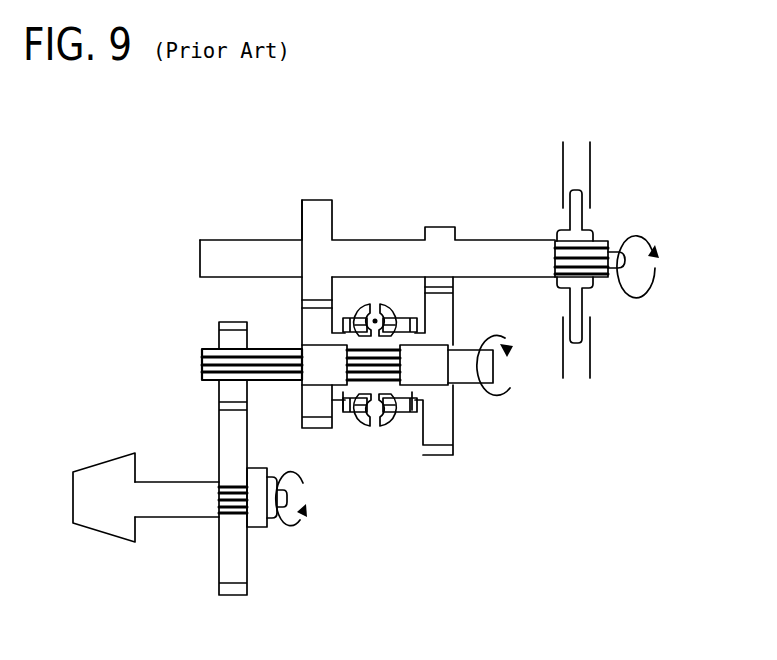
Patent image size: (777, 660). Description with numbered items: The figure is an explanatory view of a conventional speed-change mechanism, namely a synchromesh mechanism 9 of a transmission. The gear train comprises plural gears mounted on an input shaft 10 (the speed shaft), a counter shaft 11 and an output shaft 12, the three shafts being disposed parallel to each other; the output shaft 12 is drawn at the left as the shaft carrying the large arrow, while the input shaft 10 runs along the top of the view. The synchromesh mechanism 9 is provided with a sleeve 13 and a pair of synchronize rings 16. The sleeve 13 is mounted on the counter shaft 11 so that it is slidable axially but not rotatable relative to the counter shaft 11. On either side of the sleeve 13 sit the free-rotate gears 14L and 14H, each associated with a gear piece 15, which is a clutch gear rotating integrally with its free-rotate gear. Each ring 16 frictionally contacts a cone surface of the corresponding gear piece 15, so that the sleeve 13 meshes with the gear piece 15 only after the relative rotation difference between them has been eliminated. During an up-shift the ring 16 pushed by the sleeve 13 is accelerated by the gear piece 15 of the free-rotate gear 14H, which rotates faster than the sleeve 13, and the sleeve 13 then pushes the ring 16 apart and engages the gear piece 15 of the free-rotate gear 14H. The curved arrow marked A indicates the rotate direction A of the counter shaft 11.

The synchromesh mechanism 9 is at (377, 486).
The input shaft 10 is at (255, 253).
The counter shaft 11 is at (205, 363).
The output shaft 12 is at (110, 470).
The sleeve 13 is at (376, 310).
The free-rotate gear 14H is at (312, 323).
The free-rotate gear 14L is at (445, 309).
The gear piece 15 is at (343, 412).
The synchronize ring 16 is at (350, 318).
The rotate direction A is at (505, 372).